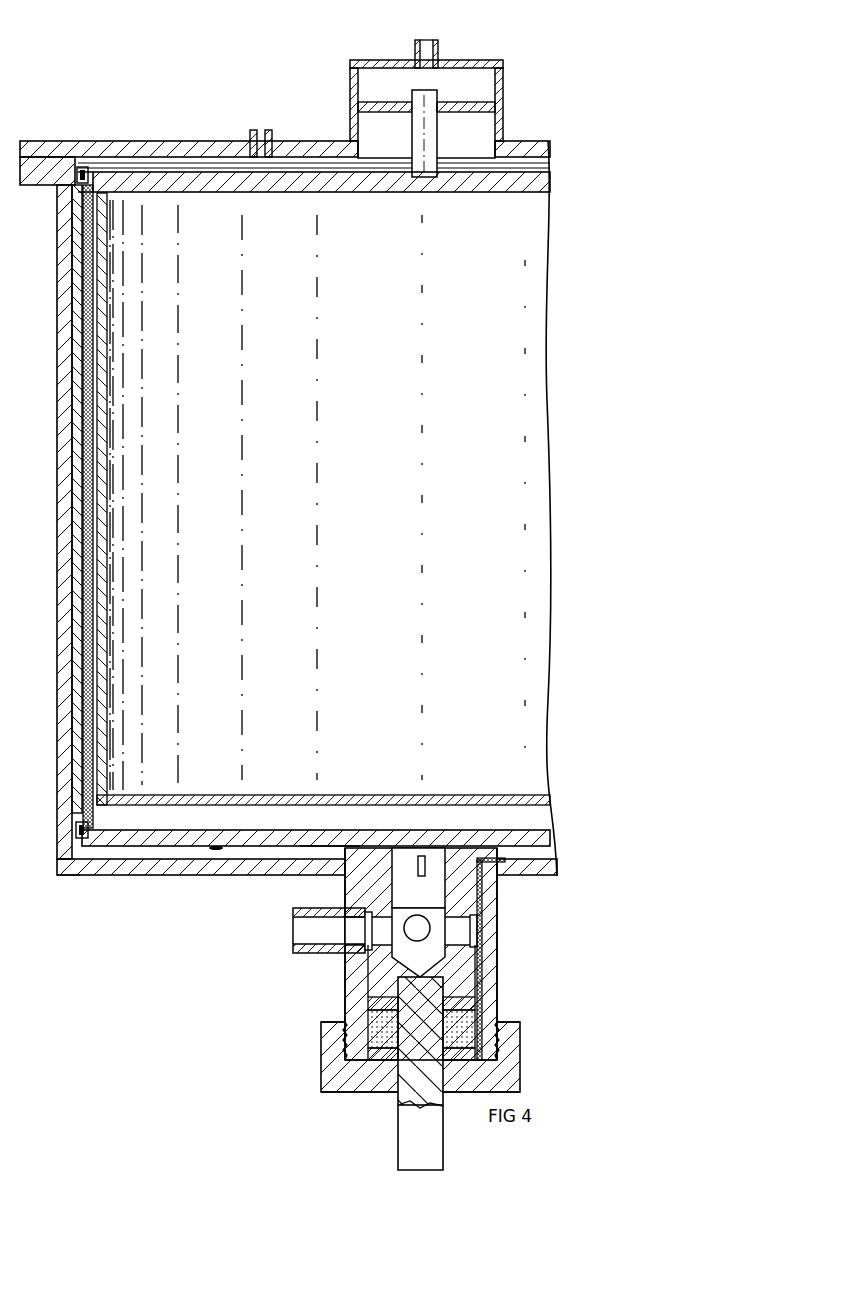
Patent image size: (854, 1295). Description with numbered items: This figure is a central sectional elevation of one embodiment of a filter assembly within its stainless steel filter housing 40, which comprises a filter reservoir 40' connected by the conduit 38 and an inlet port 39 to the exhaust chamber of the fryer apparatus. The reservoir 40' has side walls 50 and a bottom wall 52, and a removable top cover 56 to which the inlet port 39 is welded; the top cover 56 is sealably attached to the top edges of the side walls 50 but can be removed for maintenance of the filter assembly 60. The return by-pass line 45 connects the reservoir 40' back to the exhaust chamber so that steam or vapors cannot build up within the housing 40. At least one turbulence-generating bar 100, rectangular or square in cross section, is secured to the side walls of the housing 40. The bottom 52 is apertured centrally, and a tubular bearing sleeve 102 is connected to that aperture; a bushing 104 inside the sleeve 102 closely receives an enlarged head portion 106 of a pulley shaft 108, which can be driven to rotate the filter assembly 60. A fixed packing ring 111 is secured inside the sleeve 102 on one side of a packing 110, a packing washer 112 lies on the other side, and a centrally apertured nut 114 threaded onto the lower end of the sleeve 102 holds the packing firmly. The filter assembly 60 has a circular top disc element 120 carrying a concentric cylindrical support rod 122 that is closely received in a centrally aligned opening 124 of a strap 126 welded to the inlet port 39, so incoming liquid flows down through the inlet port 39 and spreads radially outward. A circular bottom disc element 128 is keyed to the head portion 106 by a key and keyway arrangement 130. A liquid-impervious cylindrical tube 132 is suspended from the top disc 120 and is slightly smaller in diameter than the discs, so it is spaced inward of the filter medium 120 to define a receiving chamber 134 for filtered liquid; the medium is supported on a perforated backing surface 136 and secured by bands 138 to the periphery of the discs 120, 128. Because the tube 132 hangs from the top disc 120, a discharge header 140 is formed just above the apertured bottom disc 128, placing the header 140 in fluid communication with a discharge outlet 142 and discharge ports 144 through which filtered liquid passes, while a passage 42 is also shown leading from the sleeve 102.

The conduit 38 is at (440, 55).
The inlet port 39 is at (350, 97).
The filter housing 40 is at (59, 900).
The filter reservoir 40' is at (314, 142).
The outlet pipe 42 is at (308, 953).
The return by-pass line 45 is at (270, 140).
The side walls 50 is at (64, 652).
The bottom wall 52 is at (162, 874).
The top cover 56 is at (150, 147).
The filter assembly 60 is at (220, 852).
The bar 100 is at (72, 452).
The tubular bearing sleeve 102 is at (493, 912).
The bushing 104 is at (482, 927).
The enlarged head portion 106 is at (480, 968).
The pulley shaft 108 is at (430, 1113).
The packing 110 is at (470, 1022).
The fixed packing ring 111 is at (476, 1003).
The packing washer 112 is at (385, 1060).
The nut 114 is at (520, 1075).
The top disc element 120 is at (188, 180).
The cylindrical support rod 122 is at (412, 134).
The opening 124 is at (440, 108).
The strap 126 is at (448, 113).
The bottom disc element 128 is at (224, 840).
The key and keyway arrangement 130 is at (426, 856).
The cylindrical tube 132 is at (103, 680).
The receiving chamber 134 is at (96, 546).
The backing surface 136 is at (89, 586).
The bands 138 is at (77, 177).
The discharge header 140 is at (344, 829).
The discharge outlet 142 is at (404, 850).
The discharge ports 144 is at (420, 940).